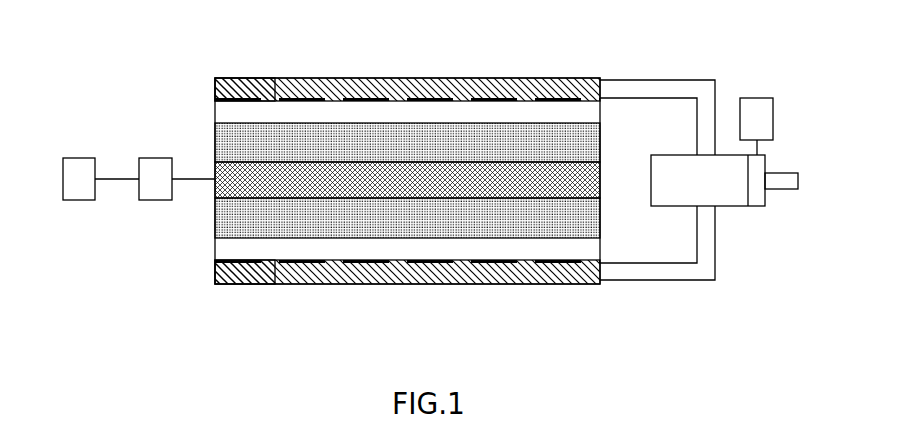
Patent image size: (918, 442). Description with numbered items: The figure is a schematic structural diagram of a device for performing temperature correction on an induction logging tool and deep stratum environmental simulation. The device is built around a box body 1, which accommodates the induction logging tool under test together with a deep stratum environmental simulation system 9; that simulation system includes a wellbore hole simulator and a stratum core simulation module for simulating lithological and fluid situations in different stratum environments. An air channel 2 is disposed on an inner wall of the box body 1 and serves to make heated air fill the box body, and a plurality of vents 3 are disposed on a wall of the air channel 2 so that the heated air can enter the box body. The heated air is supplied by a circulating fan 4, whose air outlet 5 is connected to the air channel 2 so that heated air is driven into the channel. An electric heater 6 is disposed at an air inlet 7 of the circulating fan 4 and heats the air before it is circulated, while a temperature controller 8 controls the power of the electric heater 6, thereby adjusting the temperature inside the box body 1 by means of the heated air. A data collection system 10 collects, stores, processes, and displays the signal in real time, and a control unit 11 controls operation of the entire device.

The box body 1 is at (407, 176).
The air channel 2 is at (463, 80).
The vents 3 is at (258, 96).
The circulating fan 4 is at (716, 183).
The air outlet 5 is at (703, 152).
The electric heater 6 is at (753, 190).
The air inlet 7 is at (797, 183).
The temperature controller 8 is at (760, 98).
The deep stratum environmental simulation system 9 is at (520, 135).
The data collection system 10 is at (155, 200).
The control unit 11 is at (80, 200).